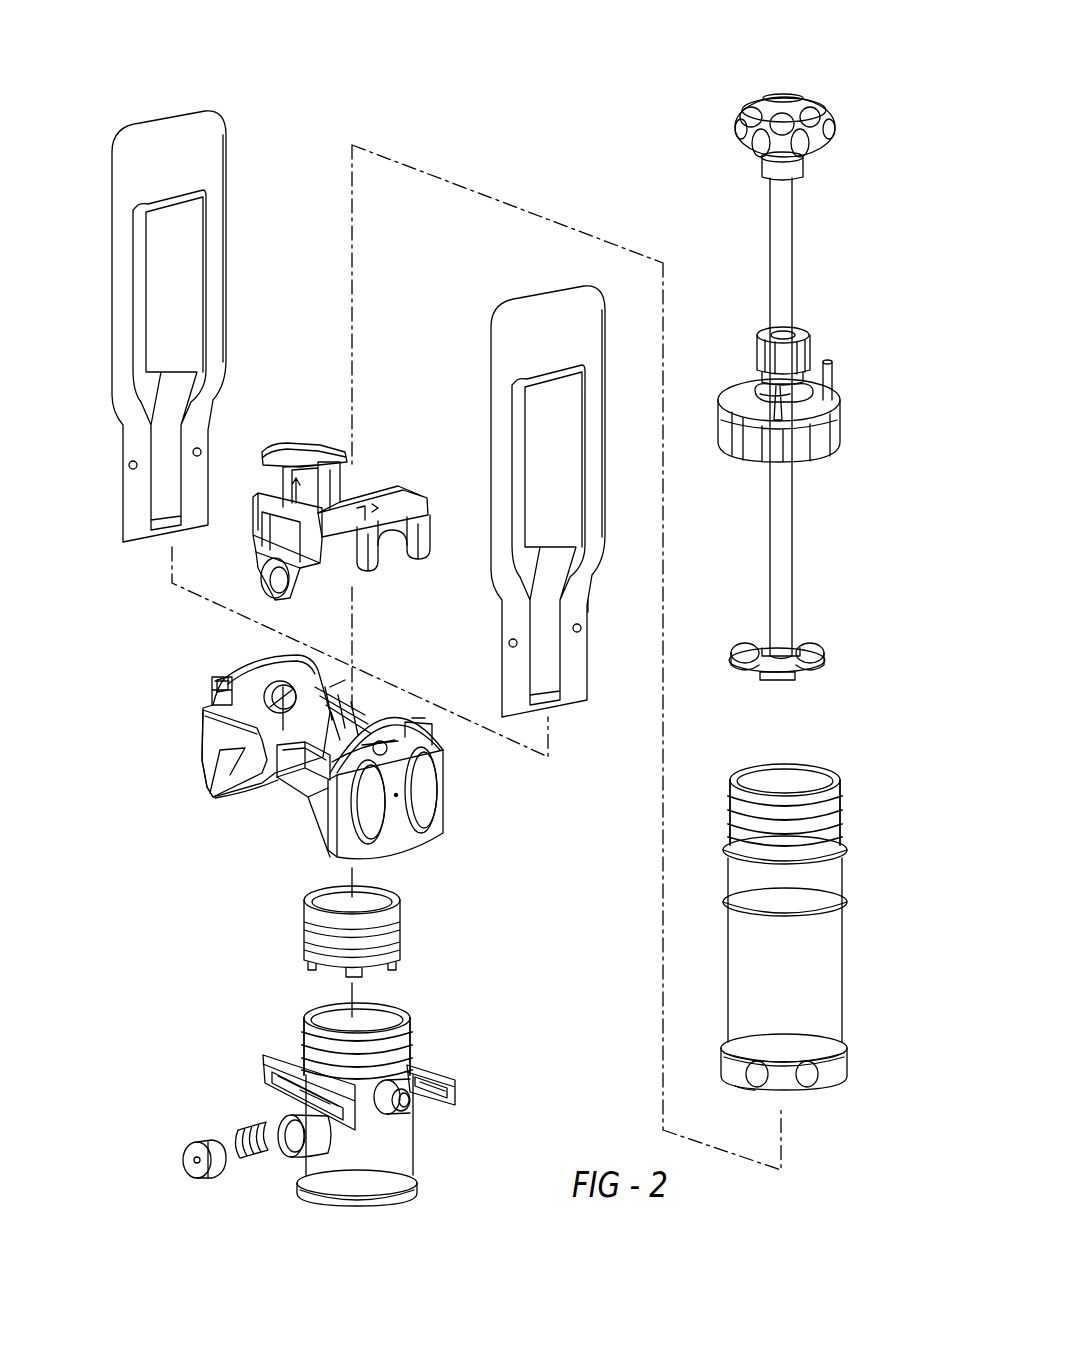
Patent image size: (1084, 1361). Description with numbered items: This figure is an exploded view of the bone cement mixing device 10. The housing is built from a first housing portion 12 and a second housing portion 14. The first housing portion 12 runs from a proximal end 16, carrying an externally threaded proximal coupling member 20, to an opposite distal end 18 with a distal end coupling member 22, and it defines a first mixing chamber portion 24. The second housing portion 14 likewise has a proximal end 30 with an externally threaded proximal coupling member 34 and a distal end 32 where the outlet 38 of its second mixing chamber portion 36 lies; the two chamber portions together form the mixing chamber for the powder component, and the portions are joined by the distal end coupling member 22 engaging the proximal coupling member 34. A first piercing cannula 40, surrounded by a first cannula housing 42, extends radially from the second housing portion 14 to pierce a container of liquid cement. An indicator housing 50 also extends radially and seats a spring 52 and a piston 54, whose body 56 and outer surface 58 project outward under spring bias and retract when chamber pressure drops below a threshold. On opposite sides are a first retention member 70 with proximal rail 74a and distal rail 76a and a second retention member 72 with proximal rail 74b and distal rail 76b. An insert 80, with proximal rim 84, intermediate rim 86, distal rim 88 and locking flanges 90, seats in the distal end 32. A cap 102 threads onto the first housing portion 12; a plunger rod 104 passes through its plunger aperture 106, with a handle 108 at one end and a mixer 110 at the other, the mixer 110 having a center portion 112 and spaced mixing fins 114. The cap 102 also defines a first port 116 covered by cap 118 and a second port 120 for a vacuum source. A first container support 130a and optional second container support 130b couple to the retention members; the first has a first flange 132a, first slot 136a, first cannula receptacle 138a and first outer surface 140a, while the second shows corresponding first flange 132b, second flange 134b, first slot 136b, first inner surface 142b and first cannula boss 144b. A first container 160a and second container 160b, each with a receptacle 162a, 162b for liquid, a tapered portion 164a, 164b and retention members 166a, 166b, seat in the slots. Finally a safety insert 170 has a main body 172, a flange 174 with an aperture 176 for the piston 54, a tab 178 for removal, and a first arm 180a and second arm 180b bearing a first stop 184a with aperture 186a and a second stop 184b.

The device 10 is at (400, 125).
The first housing portion 12 is at (791, 922).
The second housing portion 14 is at (359, 1097).
The proximal end 16 is at (840, 781).
The distal end 18 is at (822, 1090).
The proximal coupling member 20 is at (846, 826).
The distal end coupling member 22 is at (738, 1086).
The first mixing chamber portion 24 is at (790, 776).
The proximal end 30 is at (388, 1072).
The distal end 32 is at (418, 1190).
The proximal coupling member 34 is at (413, 1052).
The second mixing chamber portion 36 is at (372, 1010).
The outlet 38 is at (412, 1197).
The first piercing cannula 40 is at (415, 1098).
The first cannula housing 42 is at (405, 1108).
The indicator housing 50 is at (290, 1136).
The spring 52 is at (252, 1160).
The piston 54 is at (195, 1178).
The body 56 is at (207, 1150).
The outer surface 58 is at (190, 1156).
The first retention member 70 is at (260, 1067).
The second retention member 72 is at (491, 1062).
The proximal rail 74a is at (292, 1072).
The proximal rail 74b is at (456, 1082).
The distal rail 76a is at (282, 1090).
The distal rail 76b is at (458, 1100).
The insert 80 is at (362, 935).
The proximal rim 84 is at (306, 906).
The intermediate rim 86 is at (305, 930).
The distal rim 88 is at (310, 950).
The locking flanges 90 is at (347, 976).
The cap 102 is at (836, 426).
The plunger rod 104 is at (786, 226).
The plunger aperture 106 is at (800, 388).
The handle 108 is at (737, 128).
The mixer 110 is at (816, 648).
The center portion 112 is at (792, 650).
The mixing fins 114 is at (787, 683).
The first port 116 is at (760, 370).
The cap 118 is at (800, 332).
The second port 120 is at (832, 380).
The first container support 130a is at (332, 738).
The second container support 130b is at (231, 709).
The first flange 132a is at (290, 778).
The first flange 132b is at (258, 772).
The second flange 134b is at (330, 687).
The first slot 136a is at (400, 742).
The first slot 136b is at (248, 684).
The first cannula receptacle 138a is at (380, 741).
The first outer surface 140a is at (420, 780).
The first inner surface 142b is at (224, 680).
The first cannula boss 144b is at (288, 690).
The first container 160a is at (561, 480).
The second container 160b is at (154, 321).
The receptacle 162a is at (548, 468).
The receptacle 162b is at (155, 248).
The tapered portion 164a is at (590, 604).
The tapered portion 164b is at (128, 468).
The retention members 166a is at (580, 632).
The retention members 166b is at (197, 458).
The safety insert 170 is at (344, 470).
The main body 172 is at (262, 527).
The flange 174 is at (263, 590).
The aperture 176 is at (280, 592).
The tab 178 is at (283, 452).
The first arm 180a is at (392, 502).
The second arm 180b is at (316, 462).
The first stop 184a is at (428, 526).
The second stop 184b is at (332, 486).
The aperture 186a is at (395, 548).